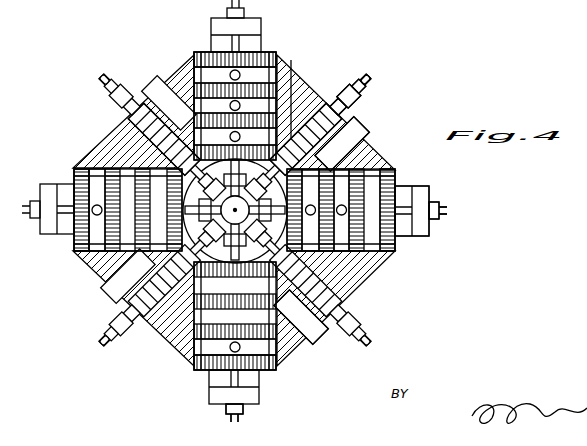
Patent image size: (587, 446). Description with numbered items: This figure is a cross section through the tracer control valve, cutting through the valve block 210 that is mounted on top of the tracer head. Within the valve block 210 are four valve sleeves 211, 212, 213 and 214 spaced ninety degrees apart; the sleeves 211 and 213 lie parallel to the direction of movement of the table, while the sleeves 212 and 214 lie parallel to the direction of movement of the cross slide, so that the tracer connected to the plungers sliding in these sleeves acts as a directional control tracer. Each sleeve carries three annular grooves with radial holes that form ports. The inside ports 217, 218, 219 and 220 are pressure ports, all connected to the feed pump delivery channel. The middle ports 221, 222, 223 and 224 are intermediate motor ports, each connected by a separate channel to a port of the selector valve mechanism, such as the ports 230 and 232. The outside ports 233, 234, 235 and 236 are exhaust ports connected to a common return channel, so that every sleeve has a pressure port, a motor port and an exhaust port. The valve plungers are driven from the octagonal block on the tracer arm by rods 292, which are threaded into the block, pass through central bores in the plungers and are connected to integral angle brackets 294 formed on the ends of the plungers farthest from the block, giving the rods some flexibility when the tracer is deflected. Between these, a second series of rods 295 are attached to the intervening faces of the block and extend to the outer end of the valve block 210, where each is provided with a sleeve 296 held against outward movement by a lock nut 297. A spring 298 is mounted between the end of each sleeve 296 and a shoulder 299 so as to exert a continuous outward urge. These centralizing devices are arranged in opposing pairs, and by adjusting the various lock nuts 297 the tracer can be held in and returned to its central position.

The valve block 210 is at (365, 157).
The valve sleeve 211 is at (388, 185).
The valve sleeve 212 is at (210, 360).
The valve sleeve 213 is at (83, 224).
The valve sleeve 214 is at (268, 60).
The inside port 217 is at (352, 150).
The inside port 218 is at (304, 338).
The inside port 219 is at (112, 142).
The inside port 220 is at (232, 130).
The middle port 221 is at (345, 208).
The middle port 222 is at (298, 338).
The middle port 223 is at (160, 146).
The middle port 224 is at (232, 100).
The selector valve port 230 is at (243, 180).
The selector valve port 232 is at (437, 216).
The outside port 233 is at (372, 212).
The outside port 234 is at (240, 350).
The outside port 235 is at (97, 202).
The outside port 236 is at (229, 72).
The rod 292 is at (238, 417).
The angle bracket 294 is at (414, 194).
The rod 295 is at (360, 86).
The sleeve 296 is at (340, 92).
The lock nut 297 is at (370, 93).
The spring 298 is at (310, 96).
The shoulder 299 is at (288, 74).